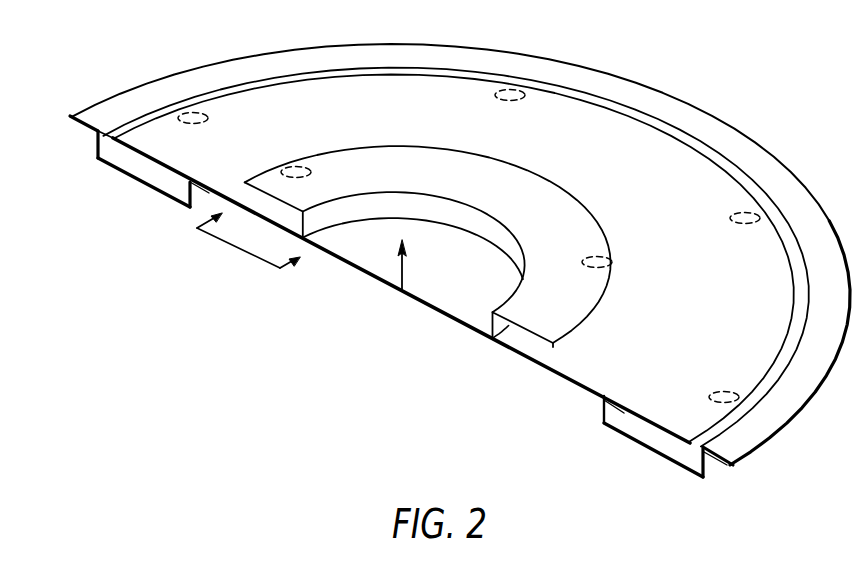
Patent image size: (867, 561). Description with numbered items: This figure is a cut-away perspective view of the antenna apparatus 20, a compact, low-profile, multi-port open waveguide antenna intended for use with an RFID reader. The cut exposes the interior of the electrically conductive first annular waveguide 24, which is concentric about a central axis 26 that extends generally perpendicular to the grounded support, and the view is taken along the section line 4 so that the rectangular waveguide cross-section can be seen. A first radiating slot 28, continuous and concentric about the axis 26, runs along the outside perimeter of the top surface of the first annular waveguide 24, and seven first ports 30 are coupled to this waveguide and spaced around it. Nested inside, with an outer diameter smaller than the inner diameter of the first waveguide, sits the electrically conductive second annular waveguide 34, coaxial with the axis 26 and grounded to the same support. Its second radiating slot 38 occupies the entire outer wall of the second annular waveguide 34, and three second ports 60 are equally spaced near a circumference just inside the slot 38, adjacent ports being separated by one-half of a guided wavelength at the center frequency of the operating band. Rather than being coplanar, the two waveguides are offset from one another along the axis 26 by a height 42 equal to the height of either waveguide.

The antenna apparatus 20 is at (446, 233).
The first radiating slot 28 is at (262, 78).
The height of either waveguide 42 is at (83, 127).
The first annular waveguide 24 is at (142, 173).
The second radiating slot 38 is at (566, 357).
The second annular waveguide 34 is at (525, 343).
The mounting holes 30 is at (512, 93).
The second ports 60 is at (293, 168).
The axis 26 is at (404, 279).
The section line 4- 4 is at (242, 254).